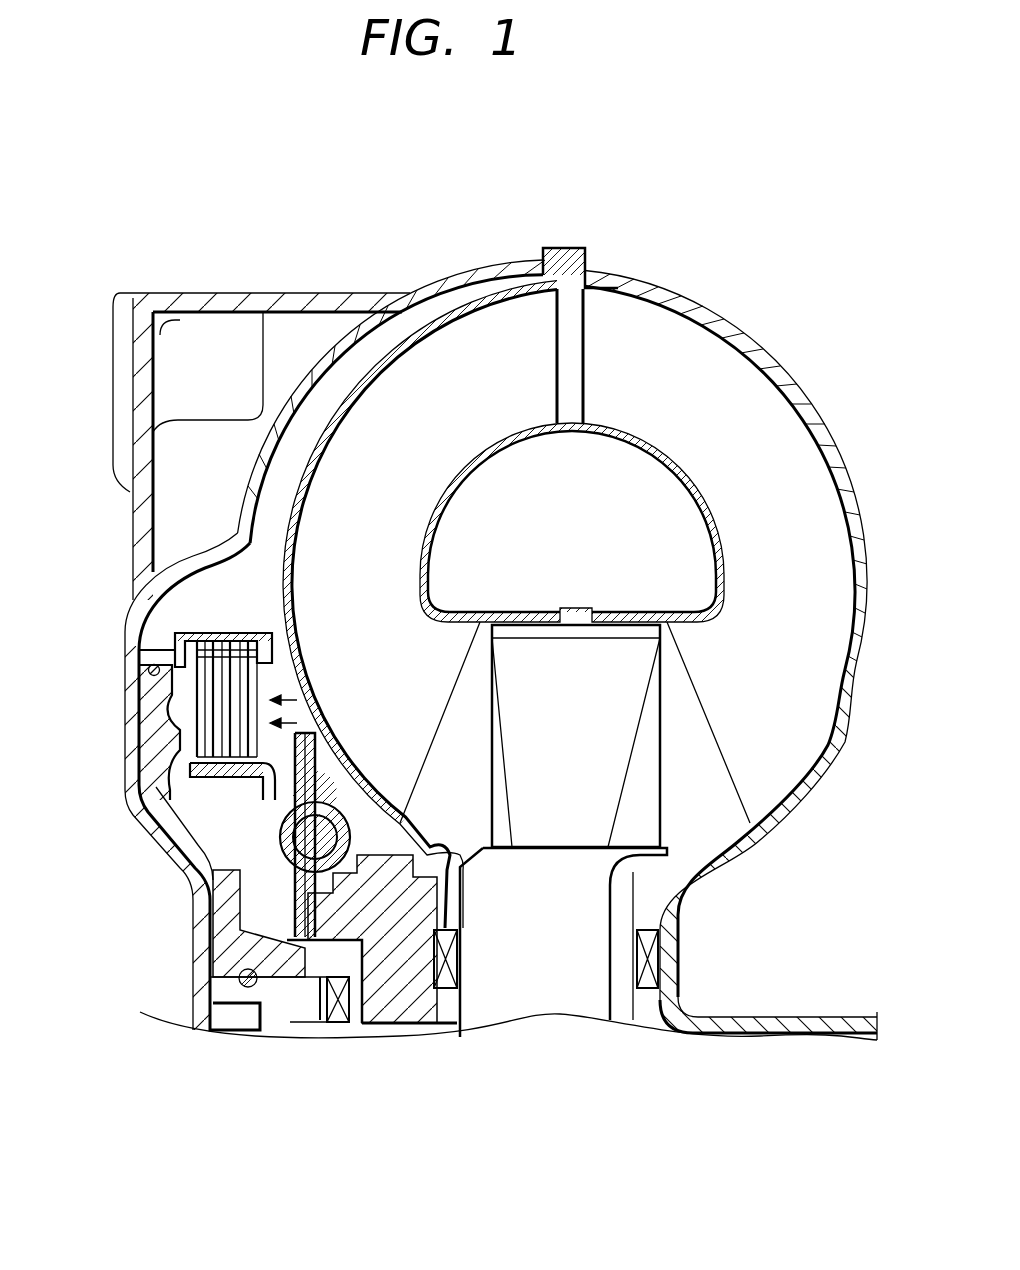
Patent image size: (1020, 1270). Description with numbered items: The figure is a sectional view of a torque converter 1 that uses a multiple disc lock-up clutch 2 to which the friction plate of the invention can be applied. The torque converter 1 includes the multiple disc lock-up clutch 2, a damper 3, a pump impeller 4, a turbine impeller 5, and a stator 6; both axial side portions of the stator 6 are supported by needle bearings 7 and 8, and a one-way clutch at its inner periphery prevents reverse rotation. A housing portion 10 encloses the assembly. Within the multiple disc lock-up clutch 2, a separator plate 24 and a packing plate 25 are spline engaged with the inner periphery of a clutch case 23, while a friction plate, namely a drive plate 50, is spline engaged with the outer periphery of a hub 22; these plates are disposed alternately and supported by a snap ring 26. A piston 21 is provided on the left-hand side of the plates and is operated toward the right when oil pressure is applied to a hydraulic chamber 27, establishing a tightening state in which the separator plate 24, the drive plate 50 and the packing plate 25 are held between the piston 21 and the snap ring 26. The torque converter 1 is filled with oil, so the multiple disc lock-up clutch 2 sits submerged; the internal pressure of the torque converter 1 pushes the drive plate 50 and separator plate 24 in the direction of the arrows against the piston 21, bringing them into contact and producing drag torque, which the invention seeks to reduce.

The torque converter 1 is at (745, 214).
The multiple disc lock-up clutch 2 is at (167, 650).
The damper 3 is at (285, 882).
The pump impeller 4 is at (725, 357).
The turbine impeller 5 is at (497, 320).
The stator 6 is at (645, 814).
The needle bearing 7 is at (647, 984).
The needle bearing 8 is at (448, 984).
The cover 10 is at (110, 345).
The piston 21 is at (160, 772).
The hub 22 is at (240, 770).
The clutch case 23 is at (140, 652).
The separator plate 24 is at (183, 647).
The packing plate 25 is at (247, 643).
The snap ring 26 is at (262, 640).
The hydraulic chamber 27 is at (140, 732).
The drive plate 50 is at (190, 780).